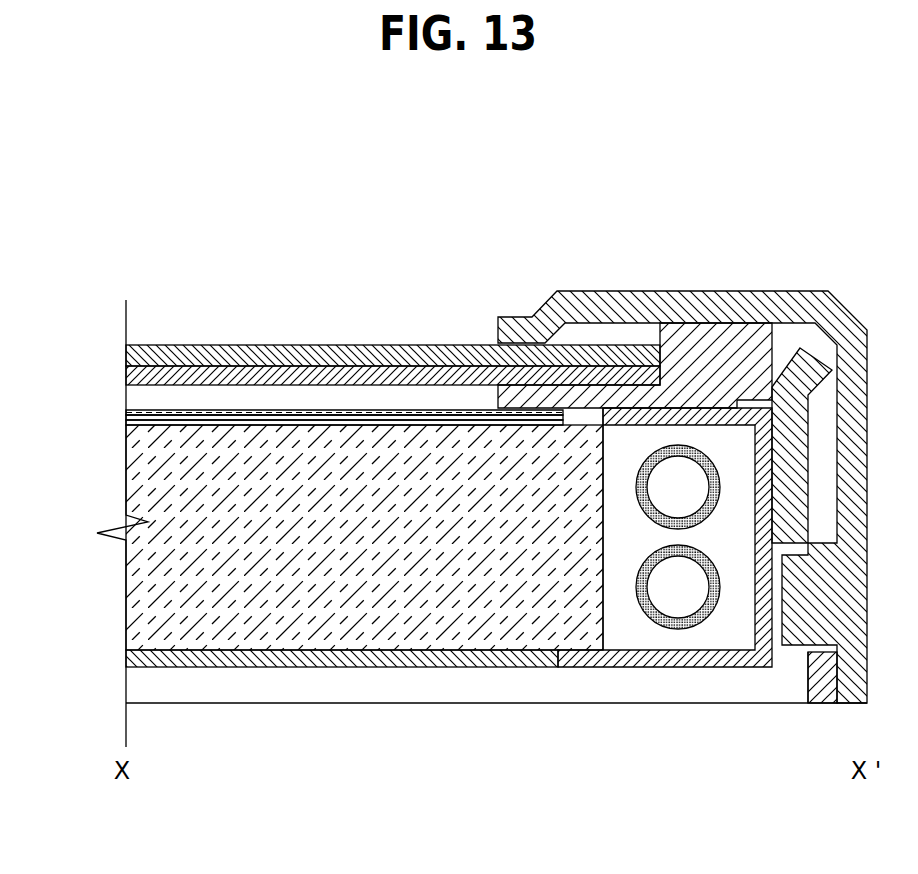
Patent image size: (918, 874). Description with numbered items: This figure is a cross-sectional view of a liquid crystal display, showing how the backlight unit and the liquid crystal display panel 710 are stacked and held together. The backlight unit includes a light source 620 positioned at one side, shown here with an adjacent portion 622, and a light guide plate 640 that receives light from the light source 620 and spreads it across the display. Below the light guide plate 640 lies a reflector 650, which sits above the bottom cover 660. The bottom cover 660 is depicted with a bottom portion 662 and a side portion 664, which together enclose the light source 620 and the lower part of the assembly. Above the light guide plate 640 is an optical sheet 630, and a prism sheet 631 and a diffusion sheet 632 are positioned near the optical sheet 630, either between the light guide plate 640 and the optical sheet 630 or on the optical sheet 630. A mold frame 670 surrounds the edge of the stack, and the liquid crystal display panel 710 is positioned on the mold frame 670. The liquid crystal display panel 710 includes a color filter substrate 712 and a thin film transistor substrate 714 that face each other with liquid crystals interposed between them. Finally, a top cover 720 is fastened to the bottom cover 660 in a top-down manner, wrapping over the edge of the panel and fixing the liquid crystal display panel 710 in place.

The light source 620 is at (651, 621).
The lamp holder 622 is at (603, 650).
The optical sheet 630 is at (126, 410).
The prism sheet 631 is at (126, 415).
The diffusion sheet 632 is at (126, 422).
The light guide plate 640 is at (128, 588).
The reflector 650 is at (126, 658).
The bottom cover 660 is at (697, 588).
The bottom chassis 662 is at (705, 690).
The side wall 664 is at (802, 505).
The mold frame 670 is at (696, 340).
The liquid crystal display panel 710 is at (393, 309).
The color filter substrate 712 is at (268, 347).
The thin film transistor substrate 714 is at (306, 378).
The top cover 720 is at (790, 305).